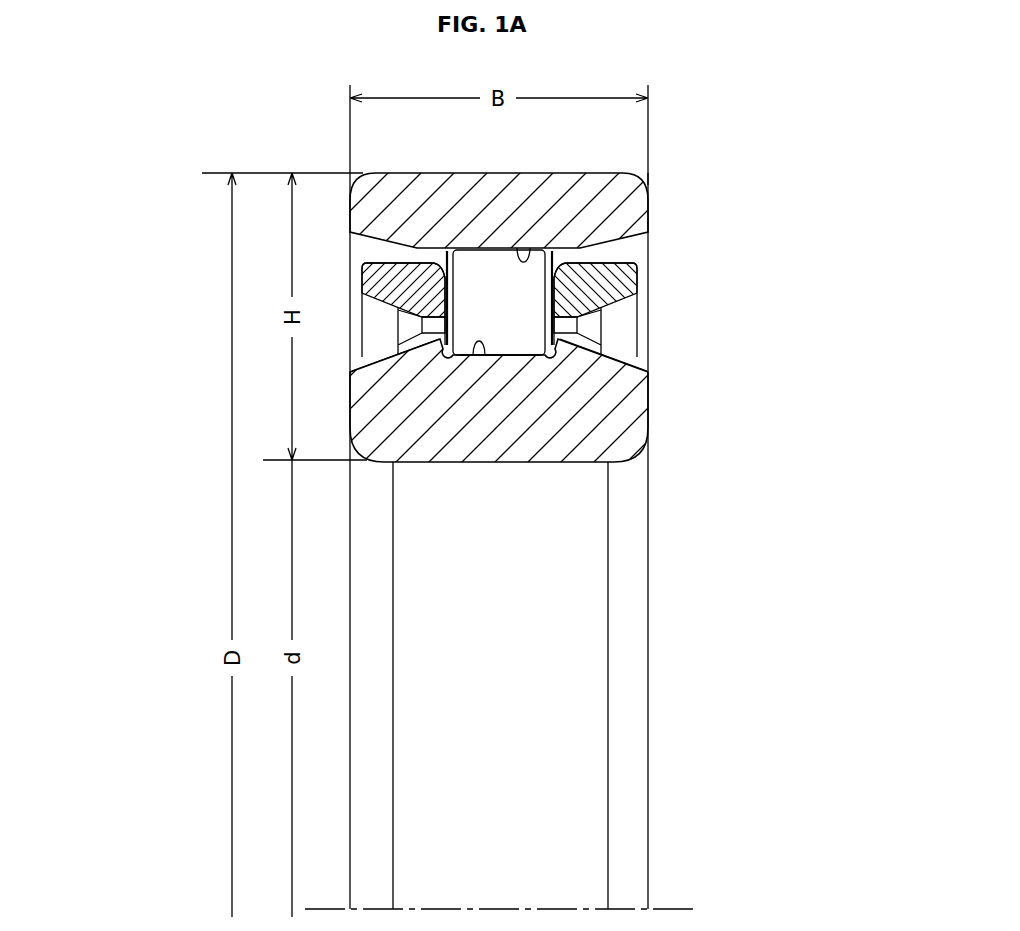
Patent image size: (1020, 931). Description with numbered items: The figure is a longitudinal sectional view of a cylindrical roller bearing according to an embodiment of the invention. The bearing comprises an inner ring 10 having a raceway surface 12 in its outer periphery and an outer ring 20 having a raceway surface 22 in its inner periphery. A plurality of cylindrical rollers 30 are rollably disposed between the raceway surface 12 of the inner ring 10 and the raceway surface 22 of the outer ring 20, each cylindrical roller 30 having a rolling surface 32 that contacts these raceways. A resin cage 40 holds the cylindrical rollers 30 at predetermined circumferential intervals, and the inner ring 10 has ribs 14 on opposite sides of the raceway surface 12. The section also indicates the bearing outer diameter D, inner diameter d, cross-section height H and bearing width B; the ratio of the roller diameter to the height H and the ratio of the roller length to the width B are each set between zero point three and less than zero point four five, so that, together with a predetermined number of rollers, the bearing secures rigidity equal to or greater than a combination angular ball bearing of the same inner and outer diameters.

The inner ring 10 is at (637, 410).
The raceway surface 12 is at (478, 342).
The ribs 14 is at (433, 348).
The outer ring 20 is at (635, 215).
The raceway surface 22 is at (533, 250).
The cylindrical roller 30 is at (478, 260).
The rolling surface 32 is at (523, 352).
The resin cage 40 is at (627, 288).